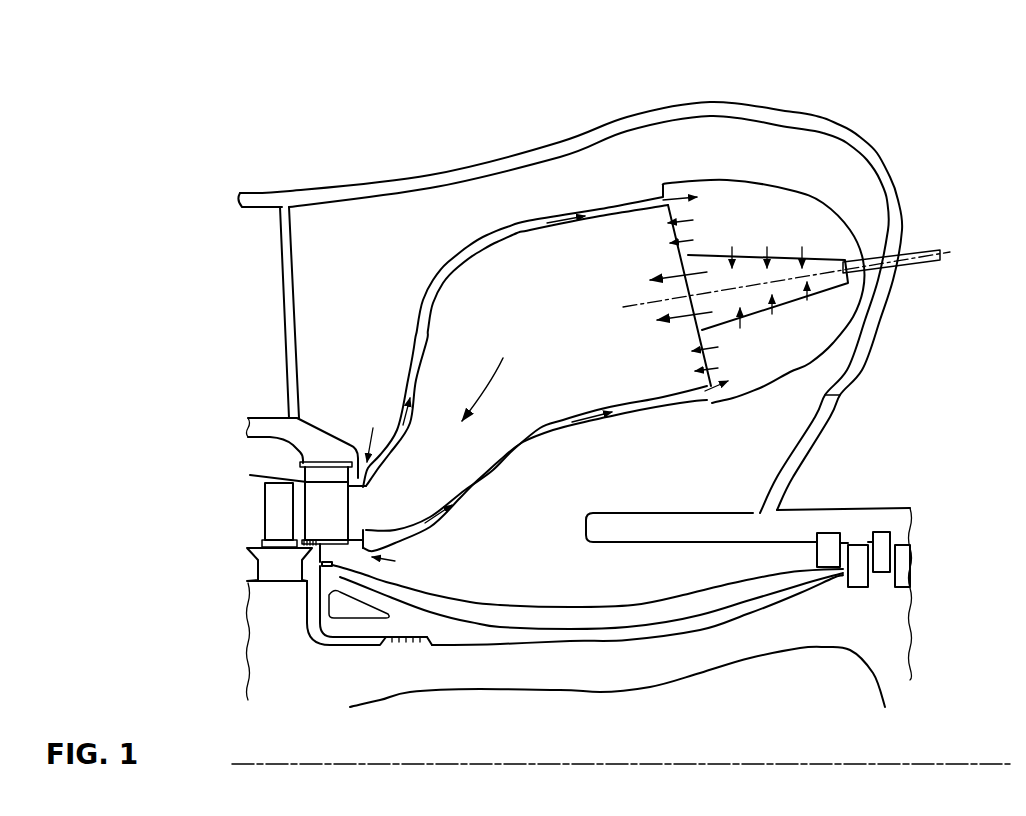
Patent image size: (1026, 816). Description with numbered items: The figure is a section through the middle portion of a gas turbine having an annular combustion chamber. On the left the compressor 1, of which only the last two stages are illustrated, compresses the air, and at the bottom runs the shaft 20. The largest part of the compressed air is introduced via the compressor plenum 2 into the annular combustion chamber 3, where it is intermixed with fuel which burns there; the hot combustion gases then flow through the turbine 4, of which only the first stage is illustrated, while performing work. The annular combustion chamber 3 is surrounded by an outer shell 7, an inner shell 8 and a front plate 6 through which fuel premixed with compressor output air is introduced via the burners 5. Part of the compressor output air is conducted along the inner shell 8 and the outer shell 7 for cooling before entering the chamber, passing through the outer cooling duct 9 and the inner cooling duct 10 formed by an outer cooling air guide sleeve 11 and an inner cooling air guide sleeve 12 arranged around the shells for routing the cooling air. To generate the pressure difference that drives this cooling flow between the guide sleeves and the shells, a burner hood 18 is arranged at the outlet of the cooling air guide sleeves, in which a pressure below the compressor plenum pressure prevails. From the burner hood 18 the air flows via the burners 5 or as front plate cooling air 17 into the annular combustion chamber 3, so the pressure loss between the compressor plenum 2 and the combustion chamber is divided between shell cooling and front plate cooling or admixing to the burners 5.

The compressor 1 is at (925, 558).
The compressor plenum 2 is at (783, 167).
The annular combustion chamber 3 is at (539, 341).
The turbine 4 is at (245, 513).
The burner 5 is at (792, 307).
The front plate 6 is at (688, 230).
The outer shell 7 is at (525, 227).
The inner shell 8 is at (563, 426).
The outer cooling duct 9 is at (650, 127).
The inner cooling duct 10 is at (627, 410).
The outer cooling air guide sleeve 11 is at (443, 268).
The inner cooling air guide sleeve 12 is at (505, 470).
The front plate cooling air 17 is at (717, 347).
The burner hood 18 is at (753, 393).
The shaft 20 is at (720, 733).